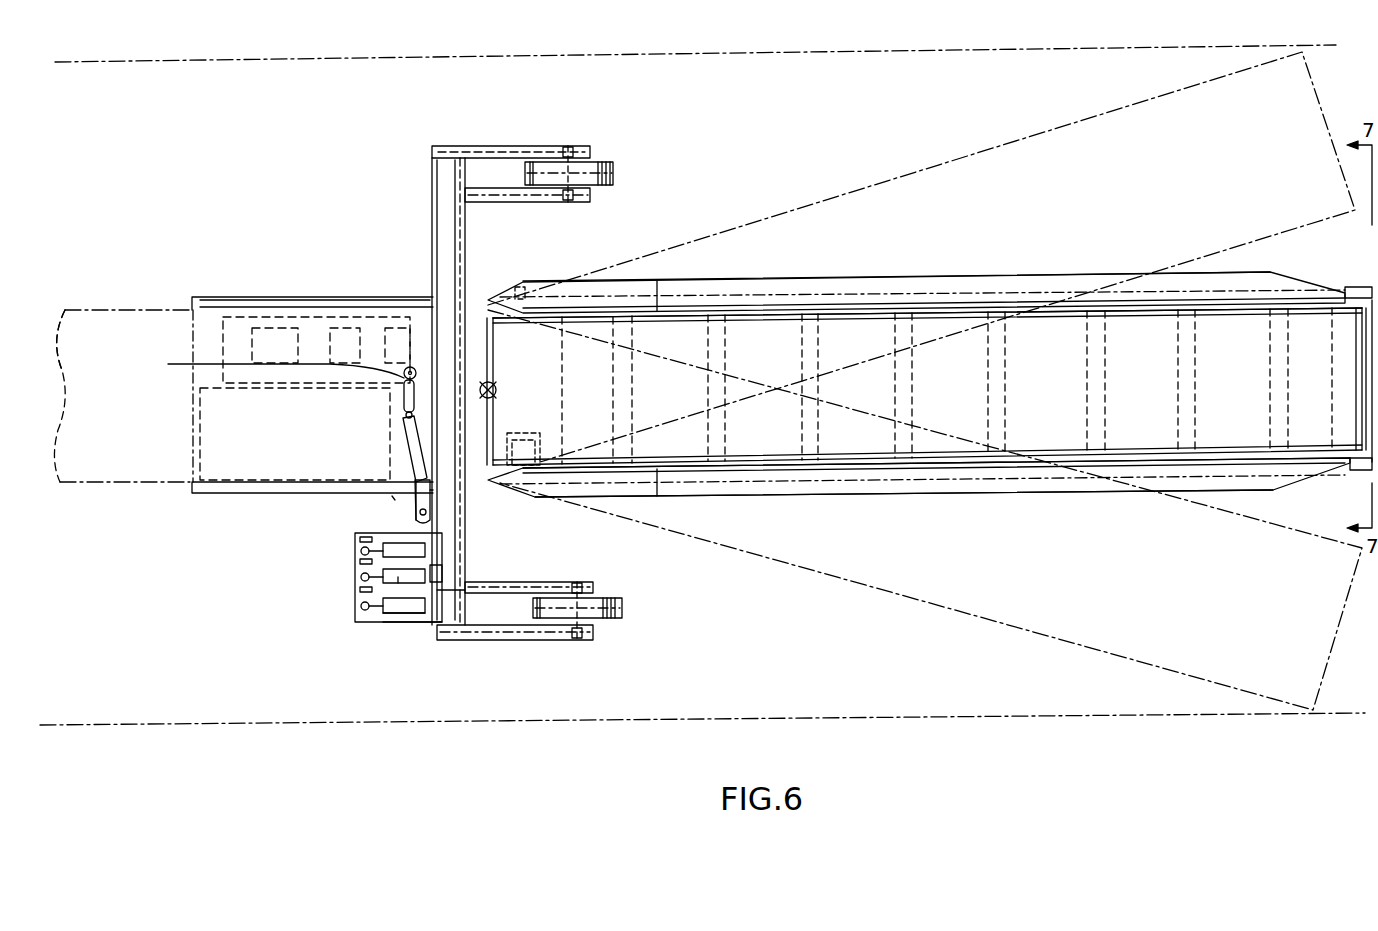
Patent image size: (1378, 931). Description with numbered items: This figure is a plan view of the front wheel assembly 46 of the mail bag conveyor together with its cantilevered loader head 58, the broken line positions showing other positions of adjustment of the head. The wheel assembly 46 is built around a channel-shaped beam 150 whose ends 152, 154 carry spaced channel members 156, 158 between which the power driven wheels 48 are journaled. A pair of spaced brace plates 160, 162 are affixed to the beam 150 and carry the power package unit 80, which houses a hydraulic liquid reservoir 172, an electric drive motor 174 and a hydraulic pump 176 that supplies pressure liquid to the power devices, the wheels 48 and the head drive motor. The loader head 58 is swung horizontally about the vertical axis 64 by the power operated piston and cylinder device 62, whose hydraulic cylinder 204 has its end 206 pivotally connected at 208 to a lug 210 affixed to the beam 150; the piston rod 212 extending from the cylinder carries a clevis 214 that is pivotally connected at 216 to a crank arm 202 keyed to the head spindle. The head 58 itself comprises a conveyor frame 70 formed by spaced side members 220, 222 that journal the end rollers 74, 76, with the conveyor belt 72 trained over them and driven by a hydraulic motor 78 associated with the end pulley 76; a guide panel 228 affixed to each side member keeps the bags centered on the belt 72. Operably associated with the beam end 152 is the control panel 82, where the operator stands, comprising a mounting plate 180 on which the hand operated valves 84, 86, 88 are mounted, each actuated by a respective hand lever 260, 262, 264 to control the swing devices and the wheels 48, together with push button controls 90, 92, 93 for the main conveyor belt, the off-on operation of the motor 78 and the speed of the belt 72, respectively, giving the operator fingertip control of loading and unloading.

The front wheel assembly 46 is at (418, 140).
The power driven wheels 48 is at (640, 162).
The loader head 58 is at (1264, 258).
The power operated piston and cylinder device 62 is at (387, 502).
The vertical axis 64 is at (494, 386).
The conveyor frame 70 is at (1145, 265).
The conveyor belt 72 is at (1045, 325).
The end roller 74 is at (1338, 350).
The end roller 76 is at (495, 420).
The hydraulic motor 78 is at (545, 462).
The power package unit 80 is at (165, 492).
The control panel 82 is at (342, 645).
The hand operated valve 84 is at (415, 610).
The hand operated valve 86 is at (398, 578).
The hand operated valve 88 is at (420, 547).
The push button control 90 is at (350, 606).
The push button control 92 is at (343, 576).
The push button control 93 is at (343, 547).
The beam 150 is at (450, 268).
The end of beam 152 is at (457, 617).
The end of beam 154 is at (440, 185).
The channel member 156 is at (527, 633).
The channel member 158 is at (533, 587).
The brace plate 160 is at (260, 496).
The brace plate 162 is at (275, 305).
The hydraulic liquid reservoir 172 is at (215, 470).
The electric drive motor 174 is at (320, 325).
The hydraulic pump 176 is at (385, 340).
The mounting plate 180 is at (403, 624).
The crank arm 202 is at (403, 432).
The hydraulic cylinder 204 is at (415, 458).
The end of cylinder 206 is at (440, 497).
The pivotal connection 208 is at (400, 510).
The lug 210 is at (432, 518).
The piston rod 212 is at (404, 412).
The clevis 214 is at (402, 392).
The pivotal connection 216 is at (266, 367).
The side member 220 is at (942, 465).
The side member 222 is at (948, 300).
The guide panel 228 is at (865, 285).
The hand lever 260 is at (343, 612).
The hand lever 262 is at (343, 604).
The hand lever 264 is at (360, 551).